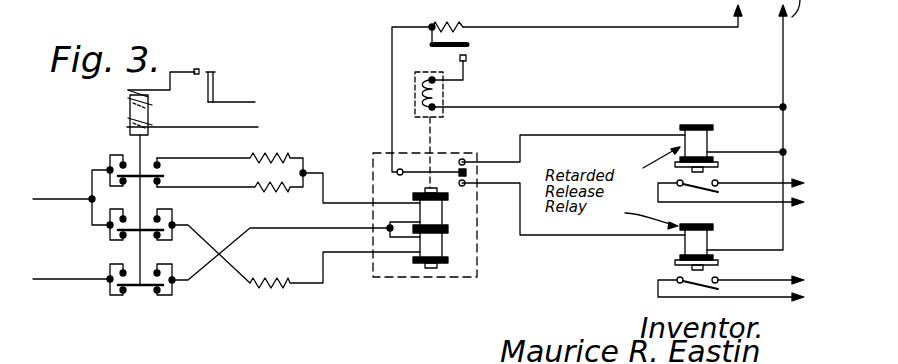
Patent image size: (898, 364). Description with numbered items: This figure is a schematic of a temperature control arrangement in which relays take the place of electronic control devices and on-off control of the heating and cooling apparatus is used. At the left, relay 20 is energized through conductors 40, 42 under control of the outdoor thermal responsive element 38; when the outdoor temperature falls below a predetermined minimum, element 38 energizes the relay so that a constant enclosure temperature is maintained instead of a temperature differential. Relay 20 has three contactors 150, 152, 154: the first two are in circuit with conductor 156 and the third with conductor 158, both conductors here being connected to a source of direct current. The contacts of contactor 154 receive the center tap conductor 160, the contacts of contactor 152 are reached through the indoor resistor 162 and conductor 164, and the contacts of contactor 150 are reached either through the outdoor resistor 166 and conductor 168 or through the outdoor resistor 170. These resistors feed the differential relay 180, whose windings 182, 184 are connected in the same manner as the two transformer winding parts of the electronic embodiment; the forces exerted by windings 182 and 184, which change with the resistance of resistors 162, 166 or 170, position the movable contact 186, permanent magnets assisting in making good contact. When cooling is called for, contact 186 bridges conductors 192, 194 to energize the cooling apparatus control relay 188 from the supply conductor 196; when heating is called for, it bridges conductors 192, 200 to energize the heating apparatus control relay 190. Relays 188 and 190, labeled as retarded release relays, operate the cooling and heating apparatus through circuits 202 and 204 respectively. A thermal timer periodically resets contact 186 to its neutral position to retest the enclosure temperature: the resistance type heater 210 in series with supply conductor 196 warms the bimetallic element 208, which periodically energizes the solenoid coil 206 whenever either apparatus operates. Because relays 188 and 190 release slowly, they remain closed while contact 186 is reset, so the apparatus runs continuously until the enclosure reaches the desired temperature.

The relay 20 is at (100, 124).
The thermal responsive element 38 is at (215, 82).
The conductor 40 is at (248, 102).
The conductor 42 is at (238, 127).
The contactor 150 is at (147, 178).
The contactor 152 is at (147, 233).
The contactor 154 is at (147, 290).
The conductor 156 is at (53, 200).
The conductor 158 is at (62, 268).
The center tap conductor 160 is at (265, 229).
The indoor resistor 162 is at (284, 286).
The conductor 164 is at (241, 272).
The outdoor resistor 166 is at (265, 190).
The conductor 168 is at (225, 188).
The outdoor resistor 170 is at (232, 158).
The differential relay 180 is at (443, 214).
The winding 182 is at (435, 210).
The winding 184 is at (435, 242).
The movable contact 186 is at (452, 158).
The cooling apparatus control relay 188 is at (683, 243).
The heating apparatus control relay 190 is at (707, 143).
The conductor 192 is at (392, 88).
The conductor 194 is at (542, 237).
The supply conductor 196 is at (737, 13).
The conductor 200 is at (545, 137).
The circuit 202 is at (731, 188).
The circuit 204 is at (731, 285).
The solenoid coil 206 is at (443, 90).
The bimetallic element 208 is at (448, 52).
The resistance type heater 210 is at (446, 26).